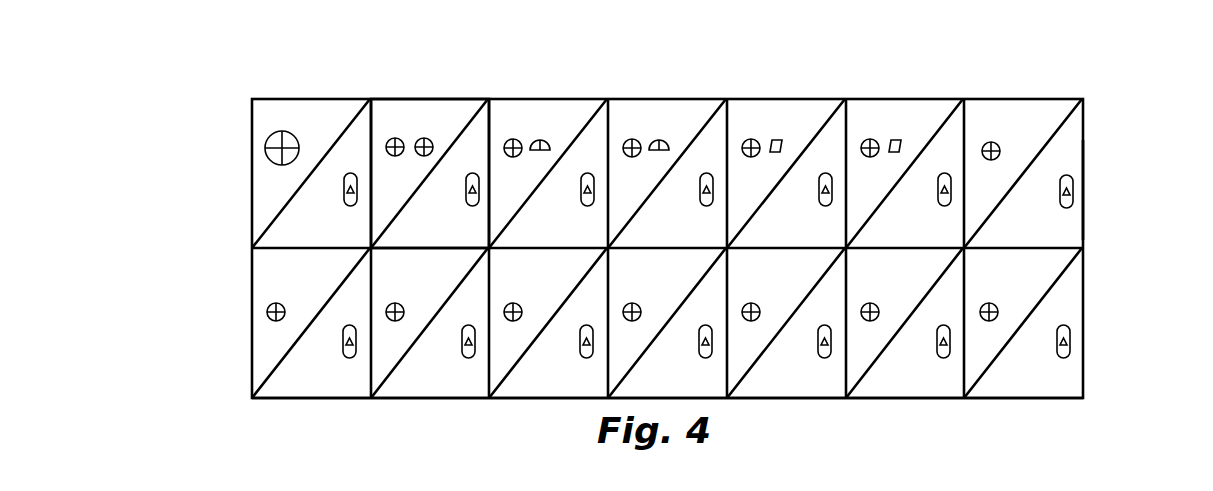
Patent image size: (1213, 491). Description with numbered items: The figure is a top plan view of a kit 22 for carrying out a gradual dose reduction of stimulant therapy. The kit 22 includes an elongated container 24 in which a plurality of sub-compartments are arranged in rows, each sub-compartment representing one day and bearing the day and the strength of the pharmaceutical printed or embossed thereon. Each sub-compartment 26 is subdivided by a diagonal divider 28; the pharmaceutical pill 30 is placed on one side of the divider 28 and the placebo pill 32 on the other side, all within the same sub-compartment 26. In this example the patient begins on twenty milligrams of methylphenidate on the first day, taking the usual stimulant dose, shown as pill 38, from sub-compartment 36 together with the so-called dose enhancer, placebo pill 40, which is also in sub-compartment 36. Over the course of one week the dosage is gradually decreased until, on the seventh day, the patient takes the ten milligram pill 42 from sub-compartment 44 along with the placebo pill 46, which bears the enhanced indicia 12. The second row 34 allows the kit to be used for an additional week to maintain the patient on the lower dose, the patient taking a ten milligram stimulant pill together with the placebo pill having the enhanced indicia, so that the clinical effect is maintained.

The enhanced indicia 12 is at (1085, 160).
The kit 22 is at (896, 428).
The elongated container 24 is at (1017, 399).
The sub-compartment 26 is at (418, 72).
The diagonal divider 28 is at (440, 157).
The pharmaceutical pill 30 is at (450, 143).
The placebo pill 32 is at (480, 188).
The row 34 is at (238, 357).
The sub-compartment 36 is at (240, 208).
The pill 38 is at (266, 148).
The placebo pill 40 is at (350, 172).
The 10 mg pill 42 is at (1000, 151).
The sub-compartment 44 is at (1085, 190).
The placebo pill 46 is at (1073, 207).